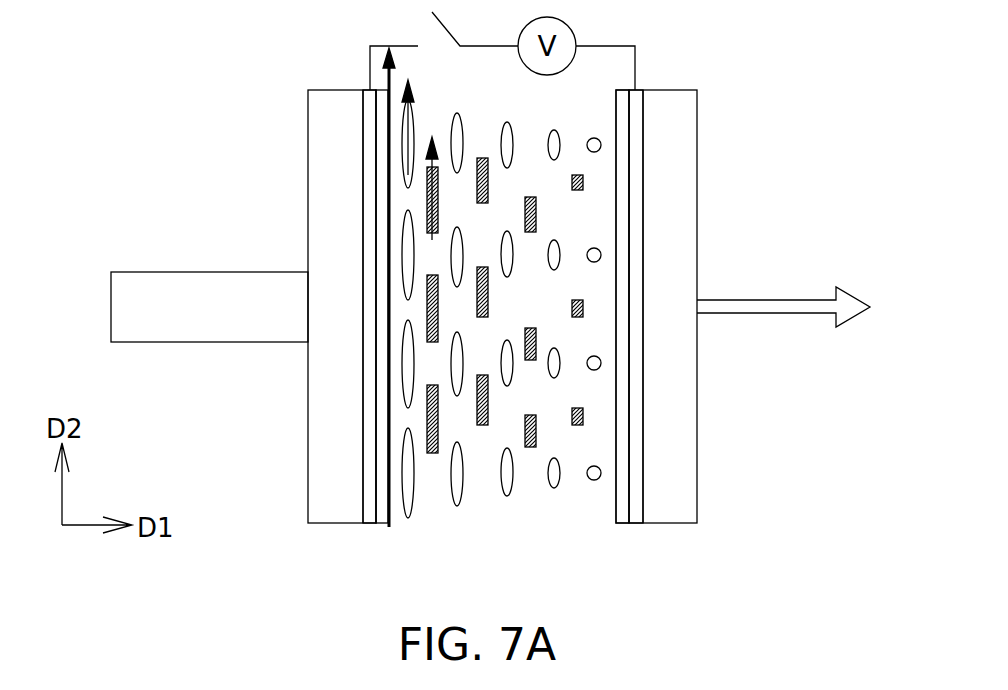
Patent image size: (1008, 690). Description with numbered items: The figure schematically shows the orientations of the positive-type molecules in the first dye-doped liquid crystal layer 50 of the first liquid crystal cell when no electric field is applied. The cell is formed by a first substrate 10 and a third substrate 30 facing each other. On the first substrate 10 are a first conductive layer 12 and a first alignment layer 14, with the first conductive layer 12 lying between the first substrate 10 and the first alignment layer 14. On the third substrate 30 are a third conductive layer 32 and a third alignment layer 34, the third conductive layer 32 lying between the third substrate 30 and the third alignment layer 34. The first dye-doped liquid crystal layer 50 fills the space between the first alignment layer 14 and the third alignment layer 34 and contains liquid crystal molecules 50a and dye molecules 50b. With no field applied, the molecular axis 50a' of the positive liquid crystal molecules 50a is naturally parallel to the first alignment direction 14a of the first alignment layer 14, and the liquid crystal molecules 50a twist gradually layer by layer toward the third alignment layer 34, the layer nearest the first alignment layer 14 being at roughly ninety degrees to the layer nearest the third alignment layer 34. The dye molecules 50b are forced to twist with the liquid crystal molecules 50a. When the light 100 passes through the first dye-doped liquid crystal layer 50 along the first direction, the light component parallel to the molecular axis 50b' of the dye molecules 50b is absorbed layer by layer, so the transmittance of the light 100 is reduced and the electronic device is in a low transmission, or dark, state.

The light 100 is at (193, 322).
The first substrate 10 is at (320, 318).
The first conductive layer 12 is at (368, 122).
The first alignment layer 14 is at (382, 163).
The first alignment direction 14a is at (414, 287).
The third substrate 30 is at (653, 318).
The third conductive layer 32 is at (635, 120).
The third alignment layer 34 is at (622, 162).
The first dye-doped liquid crystal layer 50 is at (528, 318).
The liquid crystal molecules 50a is at (316, 364).
The dye molecules 50b is at (328, 441).
The molecular axis of the liquid crystal molecules 50a' is at (450, 131).
The molecular axis of the dye molecules 50b' is at (475, 188).